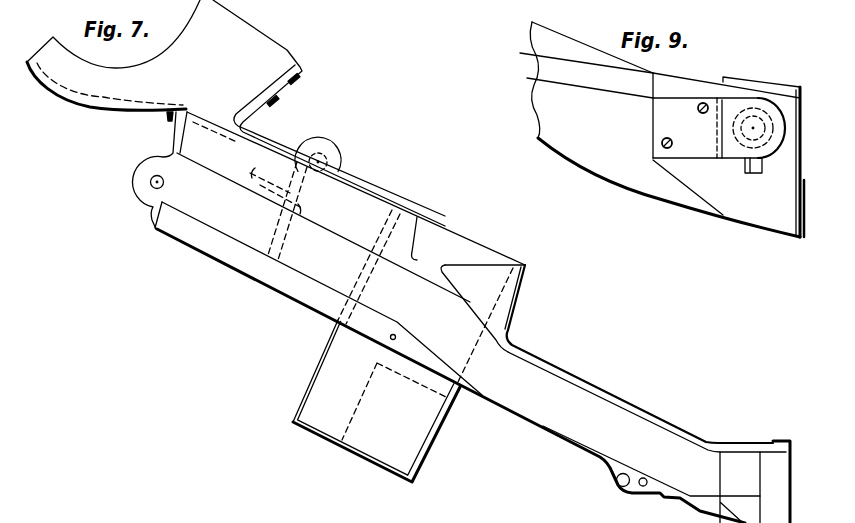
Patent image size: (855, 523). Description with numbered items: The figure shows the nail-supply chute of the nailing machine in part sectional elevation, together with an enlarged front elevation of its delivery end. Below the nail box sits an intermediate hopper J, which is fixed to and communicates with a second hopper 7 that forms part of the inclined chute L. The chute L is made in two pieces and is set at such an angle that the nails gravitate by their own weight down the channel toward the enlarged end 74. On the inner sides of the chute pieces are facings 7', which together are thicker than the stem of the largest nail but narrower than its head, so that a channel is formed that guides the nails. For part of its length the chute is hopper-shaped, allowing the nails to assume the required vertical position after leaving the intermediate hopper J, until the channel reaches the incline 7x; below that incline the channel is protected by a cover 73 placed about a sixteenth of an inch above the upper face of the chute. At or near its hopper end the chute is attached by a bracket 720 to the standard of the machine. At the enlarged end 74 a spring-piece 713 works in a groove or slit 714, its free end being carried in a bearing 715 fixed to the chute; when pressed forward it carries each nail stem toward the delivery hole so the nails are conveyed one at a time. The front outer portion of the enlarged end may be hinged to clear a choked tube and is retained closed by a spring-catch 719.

In FIG. 7, the second hopper 7 is at (329, 218).
In FIG. 7, the facing 7' is at (450, 362).
In FIG. 7, the incline 7x is at (472, 318).
In FIG. 7, the cover 73 is at (683, 426).
In FIG. 7, the bracket 720 is at (341, 155).
In FIG. 7, the inclined chute L is at (565, 402).
In FIG. 9, the inclined chute L is at (660, 129).
In FIG. 7, the intermediate hopper J is at (236, 113).
In FIG. 9, the enlarged end 74 is at (719, 137).
In FIG. 9, the spring-piece 713 is at (751, 122).
In FIG. 9, the groove or slit 714 is at (748, 170).
In FIG. 9, the bearing 715 is at (717, 120).
In FIG. 9, the spring-catch 719 is at (791, 237).